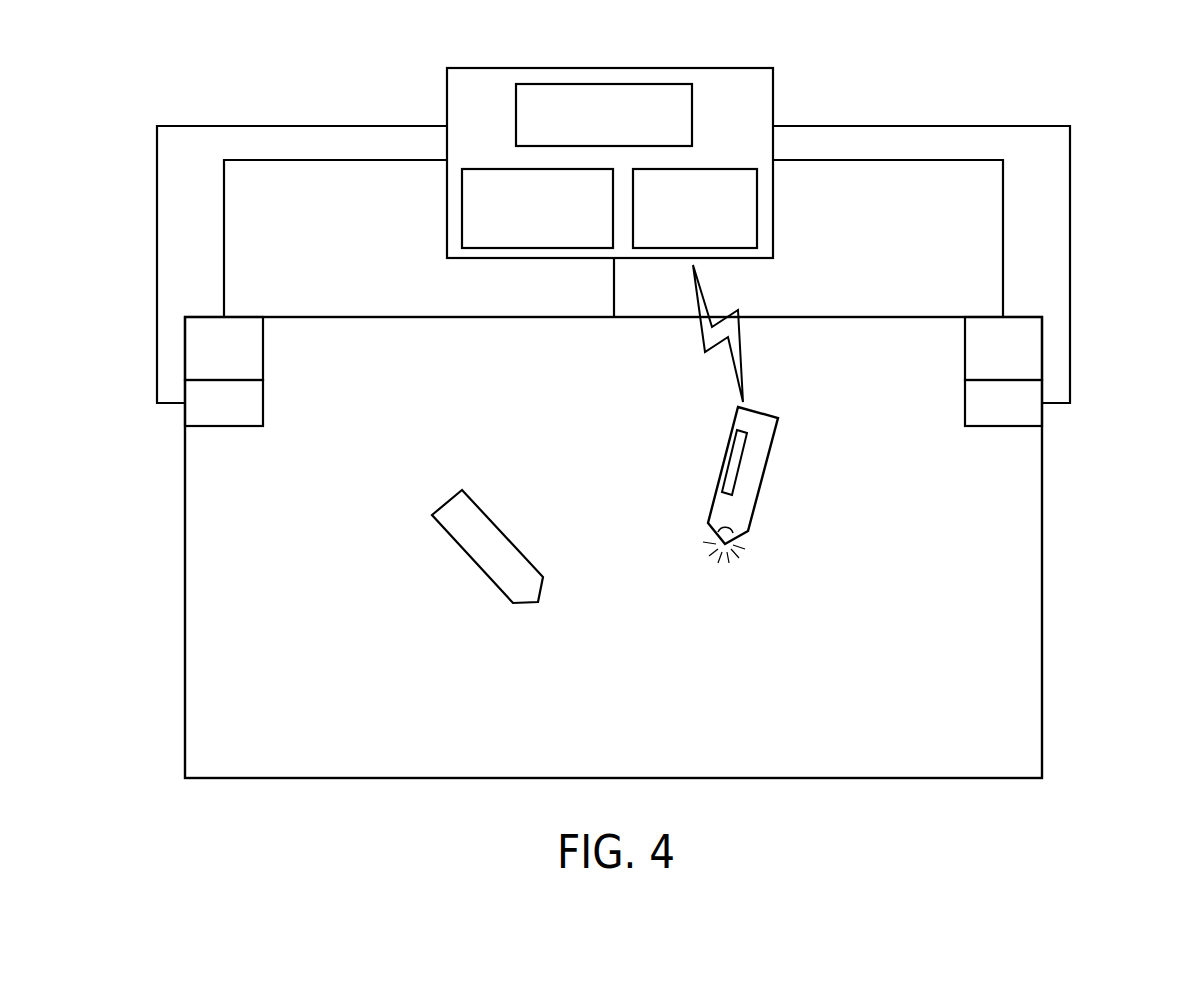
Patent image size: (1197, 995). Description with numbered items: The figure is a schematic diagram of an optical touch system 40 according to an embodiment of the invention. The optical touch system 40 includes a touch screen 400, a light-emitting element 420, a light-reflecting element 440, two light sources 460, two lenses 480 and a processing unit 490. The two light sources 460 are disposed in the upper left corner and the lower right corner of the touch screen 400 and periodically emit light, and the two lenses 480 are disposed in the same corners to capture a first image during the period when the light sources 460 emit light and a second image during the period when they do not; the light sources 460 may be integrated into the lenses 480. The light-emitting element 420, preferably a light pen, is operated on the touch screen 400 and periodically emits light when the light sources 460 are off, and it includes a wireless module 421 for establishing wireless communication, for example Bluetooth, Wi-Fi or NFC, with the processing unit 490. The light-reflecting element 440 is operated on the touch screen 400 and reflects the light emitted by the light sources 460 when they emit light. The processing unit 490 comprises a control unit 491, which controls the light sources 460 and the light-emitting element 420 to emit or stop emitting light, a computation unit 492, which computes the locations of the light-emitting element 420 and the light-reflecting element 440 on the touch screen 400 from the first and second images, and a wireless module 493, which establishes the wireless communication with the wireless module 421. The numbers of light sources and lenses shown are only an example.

The optical touch system 40 is at (1080, 80).
The touch screen 400 is at (1043, 542).
The light-emitting element 420 is at (758, 502).
The wireless module 421 is at (730, 463).
The light-reflecting element 440 is at (502, 530).
The light source 460 is at (263, 403).
The lens 480 is at (263, 345).
The processing unit 490 is at (774, 88).
The control unit 491 is at (693, 115).
The computation unit 492 is at (462, 207).
The wireless module 493 is at (758, 207).